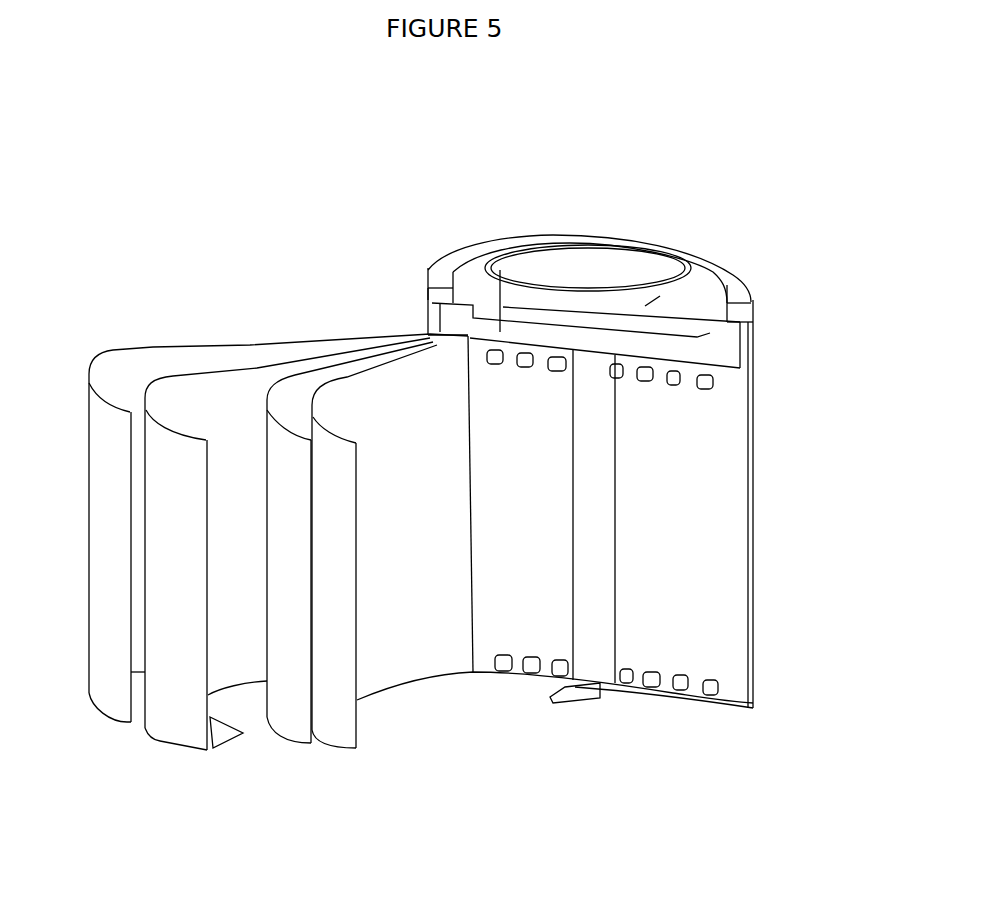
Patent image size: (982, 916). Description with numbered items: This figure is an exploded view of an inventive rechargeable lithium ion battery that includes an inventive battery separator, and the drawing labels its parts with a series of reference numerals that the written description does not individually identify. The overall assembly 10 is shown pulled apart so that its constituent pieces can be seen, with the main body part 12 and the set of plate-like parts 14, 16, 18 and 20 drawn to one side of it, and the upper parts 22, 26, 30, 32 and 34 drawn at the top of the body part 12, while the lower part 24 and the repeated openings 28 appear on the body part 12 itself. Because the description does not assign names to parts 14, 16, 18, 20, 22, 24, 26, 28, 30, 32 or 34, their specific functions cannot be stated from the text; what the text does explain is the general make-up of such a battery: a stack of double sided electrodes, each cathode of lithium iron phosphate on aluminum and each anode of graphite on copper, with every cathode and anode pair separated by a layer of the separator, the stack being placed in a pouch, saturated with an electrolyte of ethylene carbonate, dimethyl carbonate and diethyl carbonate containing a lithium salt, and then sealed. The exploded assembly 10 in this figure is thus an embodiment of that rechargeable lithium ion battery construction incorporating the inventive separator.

The heat exchanger assembly 10 is at (148, 177).
The cylindrical body 12 is at (760, 657).
The first fin 14 is at (158, 735).
The fourth fin 16 is at (343, 748).
The fins 18 is at (257, 367).
The base 20 is at (231, 748).
The top cap 22 is at (492, 270).
The slot 24 is at (485, 673).
The opening 26 is at (590, 270).
The holes 28 is at (680, 373).
The inner ring 30 is at (648, 305).
The flange 32 is at (745, 322).
The cap rim 34 is at (428, 283).